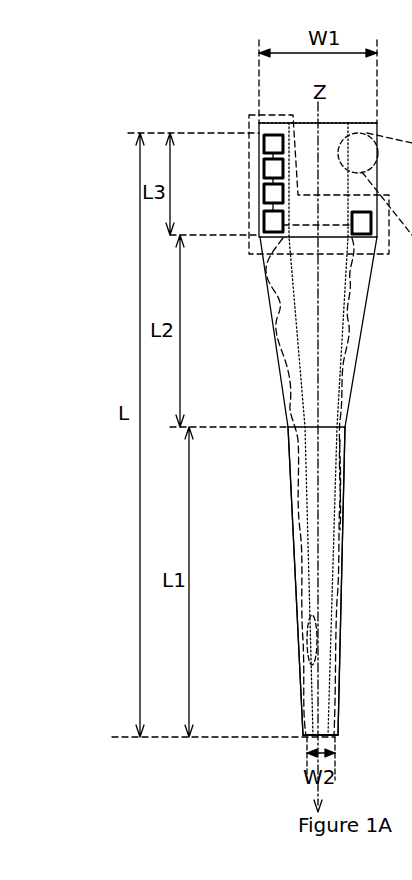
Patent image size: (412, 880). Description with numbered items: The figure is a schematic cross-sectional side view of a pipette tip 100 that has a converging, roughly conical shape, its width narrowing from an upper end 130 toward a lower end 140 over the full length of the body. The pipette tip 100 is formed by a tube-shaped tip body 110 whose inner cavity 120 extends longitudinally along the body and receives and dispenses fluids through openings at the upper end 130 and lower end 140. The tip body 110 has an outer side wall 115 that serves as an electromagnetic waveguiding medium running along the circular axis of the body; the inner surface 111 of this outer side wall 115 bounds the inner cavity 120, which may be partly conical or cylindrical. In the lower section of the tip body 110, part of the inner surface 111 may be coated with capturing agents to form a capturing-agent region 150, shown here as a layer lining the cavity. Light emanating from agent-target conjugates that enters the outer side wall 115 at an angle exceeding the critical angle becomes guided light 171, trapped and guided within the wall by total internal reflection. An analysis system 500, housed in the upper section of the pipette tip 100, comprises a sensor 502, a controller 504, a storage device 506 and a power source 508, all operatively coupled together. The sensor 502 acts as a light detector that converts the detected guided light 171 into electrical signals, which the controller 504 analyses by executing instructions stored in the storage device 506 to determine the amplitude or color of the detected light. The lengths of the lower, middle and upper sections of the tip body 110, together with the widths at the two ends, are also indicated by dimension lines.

The pipette tip 100 is at (116, 249).
The tip body 110 is at (283, 383).
The inner surface 111 is at (290, 278).
The outer side wall 115 is at (300, 452).
The inner cavity 120 is at (313, 538).
The upper end 130 is at (302, 120).
The lower end 140 is at (312, 743).
The capturing-agent region 150 is at (318, 429).
The guided light 171 is at (345, 519).
The analysis system 500 is at (248, 123).
The sensor 502 is at (263, 225).
The controller 504 is at (263, 197).
The storage device 506 is at (263, 169).
The power source 508 is at (263, 147).